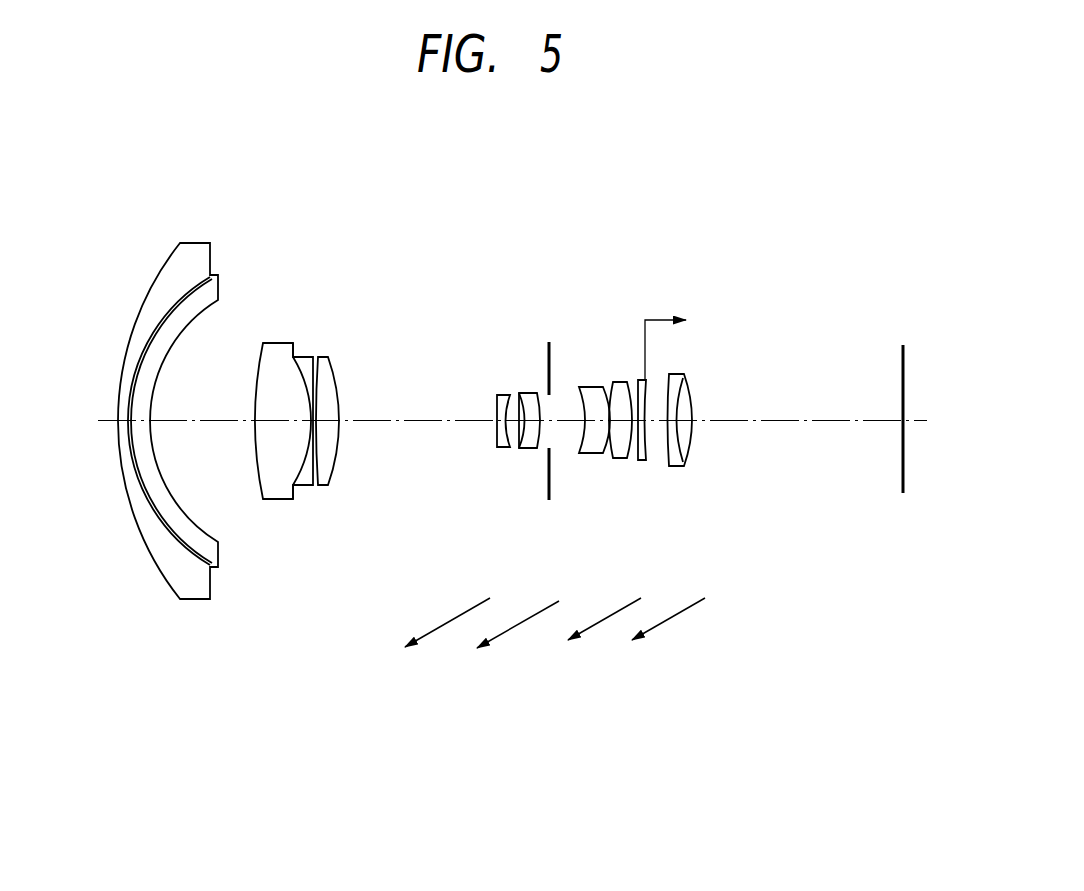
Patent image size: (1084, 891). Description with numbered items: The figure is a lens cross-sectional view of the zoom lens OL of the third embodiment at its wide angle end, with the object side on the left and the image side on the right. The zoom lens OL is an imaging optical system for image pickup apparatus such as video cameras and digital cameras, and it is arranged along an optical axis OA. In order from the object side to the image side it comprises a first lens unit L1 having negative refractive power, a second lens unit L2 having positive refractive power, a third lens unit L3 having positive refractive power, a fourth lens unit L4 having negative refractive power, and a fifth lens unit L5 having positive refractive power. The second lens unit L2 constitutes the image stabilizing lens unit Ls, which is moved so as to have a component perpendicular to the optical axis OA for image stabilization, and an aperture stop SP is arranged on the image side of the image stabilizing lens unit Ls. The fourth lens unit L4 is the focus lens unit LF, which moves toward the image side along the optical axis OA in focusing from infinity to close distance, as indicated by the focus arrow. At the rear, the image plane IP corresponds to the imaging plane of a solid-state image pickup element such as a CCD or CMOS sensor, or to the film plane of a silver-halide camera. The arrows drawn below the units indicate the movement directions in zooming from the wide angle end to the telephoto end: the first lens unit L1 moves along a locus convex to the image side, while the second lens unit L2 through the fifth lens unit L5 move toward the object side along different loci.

The zoom lens OL is at (701, 180).
The optical axis OA is at (495, 421).
The first lens unit L1 is at (350, 598).
The second lens unit L2 is at (495, 450).
The image stabilizing lens unit Ls is at (513, 382).
The aperture stop SP is at (546, 344).
The third lens unit L3 is at (627, 508).
The fourth lens unit L4 is at (652, 481).
The focus lens unit LF is at (668, 508).
The fifth lens unit L5 is at (730, 508).
The image plane IP is at (900, 346).